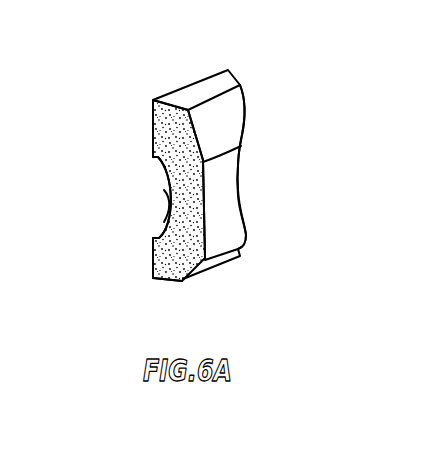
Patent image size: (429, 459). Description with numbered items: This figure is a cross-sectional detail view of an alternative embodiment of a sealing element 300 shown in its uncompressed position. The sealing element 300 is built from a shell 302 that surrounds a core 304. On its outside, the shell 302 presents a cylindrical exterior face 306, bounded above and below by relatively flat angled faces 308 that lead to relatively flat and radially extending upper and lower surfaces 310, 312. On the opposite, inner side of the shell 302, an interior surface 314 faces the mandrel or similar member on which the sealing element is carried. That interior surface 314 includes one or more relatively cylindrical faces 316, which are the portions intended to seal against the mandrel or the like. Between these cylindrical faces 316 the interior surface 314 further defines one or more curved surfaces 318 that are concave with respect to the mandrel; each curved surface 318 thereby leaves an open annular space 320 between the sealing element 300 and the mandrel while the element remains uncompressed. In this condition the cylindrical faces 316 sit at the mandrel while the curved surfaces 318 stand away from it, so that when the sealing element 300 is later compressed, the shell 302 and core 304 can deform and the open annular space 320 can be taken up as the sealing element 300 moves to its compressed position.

The sealing element 300 is at (250, 137).
The shell 302 is at (227, 168).
The core 304 is at (190, 190).
The cylindrical exterior face 306 is at (228, 210).
The angled faces 308 is at (225, 107).
The upper surface 310 is at (229, 72).
The lower surface 312 is at (165, 281).
The interior surface 314 is at (153, 144).
The cylindrical faces 316 is at (153, 119).
The curved surfaces 318 is at (167, 207).
The open annular space 320 is at (158, 188).